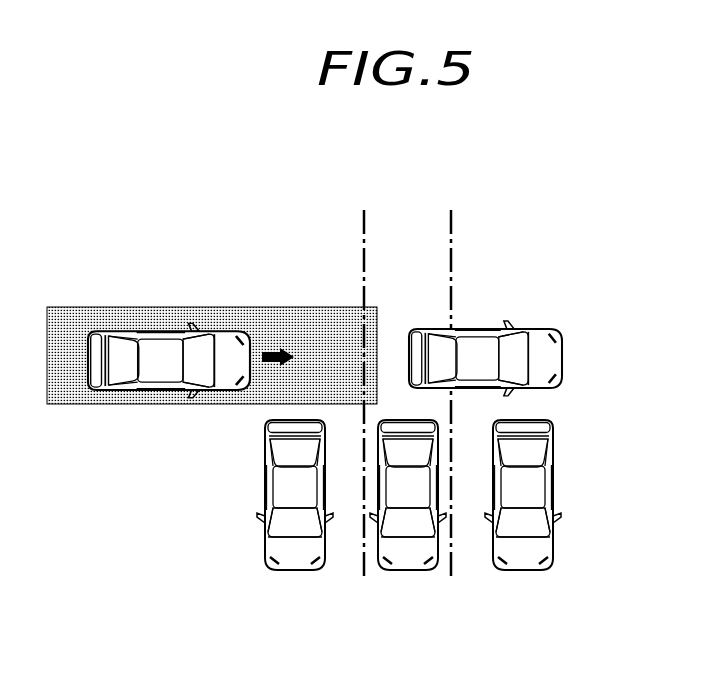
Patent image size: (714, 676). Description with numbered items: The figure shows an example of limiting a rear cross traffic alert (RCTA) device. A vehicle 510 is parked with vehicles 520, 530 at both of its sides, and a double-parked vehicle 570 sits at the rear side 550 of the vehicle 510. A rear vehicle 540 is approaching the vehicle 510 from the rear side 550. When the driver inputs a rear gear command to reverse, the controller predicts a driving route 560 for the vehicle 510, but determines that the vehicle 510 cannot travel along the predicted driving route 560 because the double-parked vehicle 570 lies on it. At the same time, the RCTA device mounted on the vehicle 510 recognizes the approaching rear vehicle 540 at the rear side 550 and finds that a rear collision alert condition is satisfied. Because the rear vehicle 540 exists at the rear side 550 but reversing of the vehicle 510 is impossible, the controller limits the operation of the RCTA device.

The vehicle 510 is at (410, 570).
The vehicle 520 is at (295, 570).
The vehicle 530 is at (522, 570).
The rear vehicle 540 is at (135, 327).
The rear side 550 is at (68, 306).
The driving route 560 is at (456, 227).
The double-parked vehicle 570 is at (560, 357).